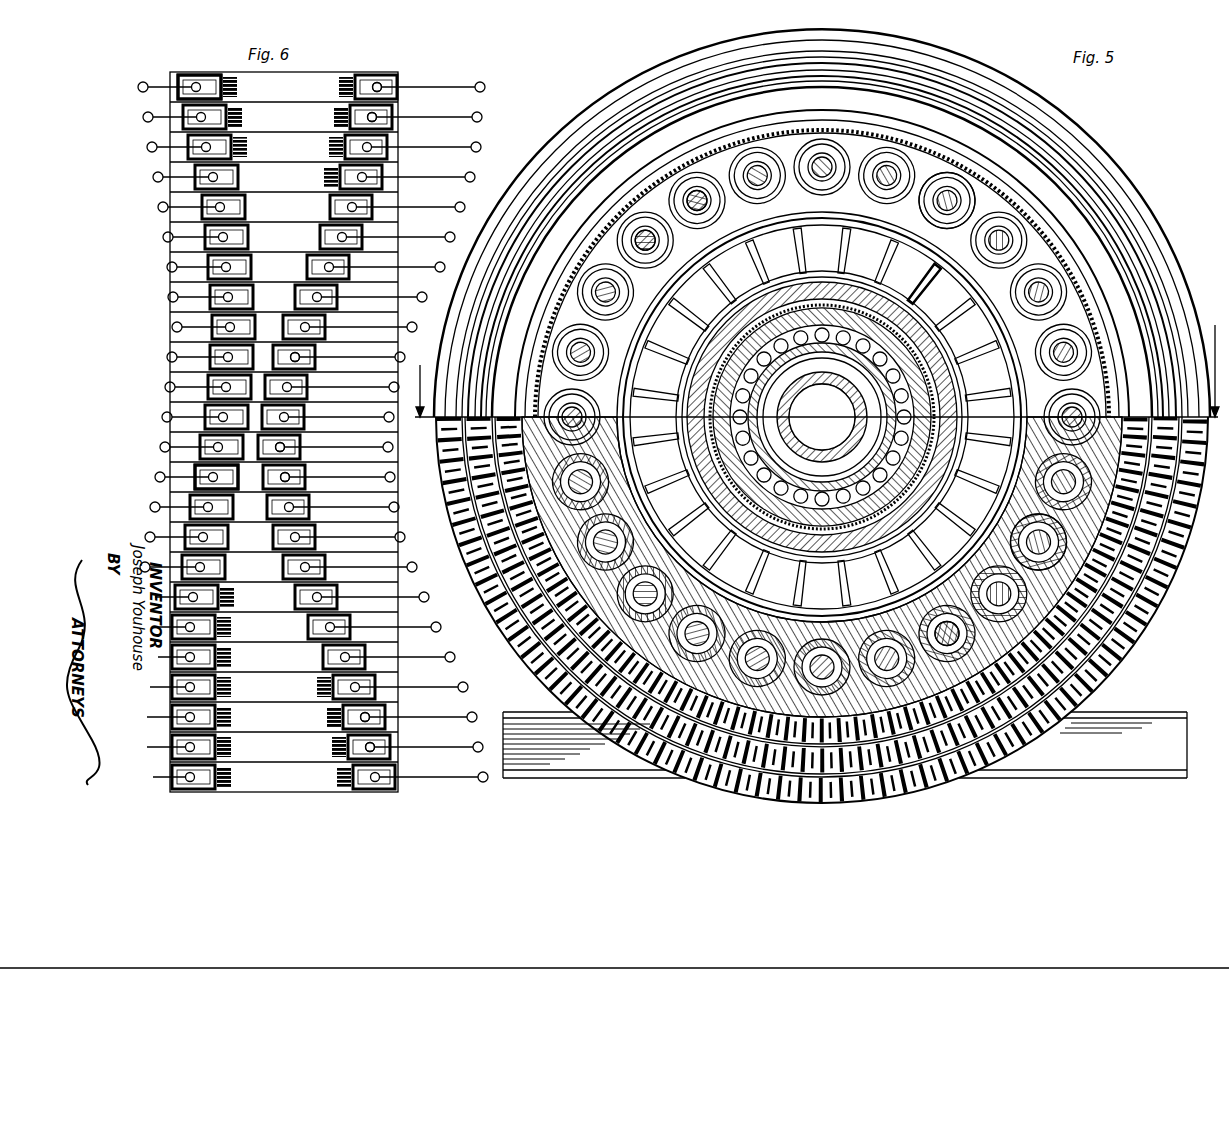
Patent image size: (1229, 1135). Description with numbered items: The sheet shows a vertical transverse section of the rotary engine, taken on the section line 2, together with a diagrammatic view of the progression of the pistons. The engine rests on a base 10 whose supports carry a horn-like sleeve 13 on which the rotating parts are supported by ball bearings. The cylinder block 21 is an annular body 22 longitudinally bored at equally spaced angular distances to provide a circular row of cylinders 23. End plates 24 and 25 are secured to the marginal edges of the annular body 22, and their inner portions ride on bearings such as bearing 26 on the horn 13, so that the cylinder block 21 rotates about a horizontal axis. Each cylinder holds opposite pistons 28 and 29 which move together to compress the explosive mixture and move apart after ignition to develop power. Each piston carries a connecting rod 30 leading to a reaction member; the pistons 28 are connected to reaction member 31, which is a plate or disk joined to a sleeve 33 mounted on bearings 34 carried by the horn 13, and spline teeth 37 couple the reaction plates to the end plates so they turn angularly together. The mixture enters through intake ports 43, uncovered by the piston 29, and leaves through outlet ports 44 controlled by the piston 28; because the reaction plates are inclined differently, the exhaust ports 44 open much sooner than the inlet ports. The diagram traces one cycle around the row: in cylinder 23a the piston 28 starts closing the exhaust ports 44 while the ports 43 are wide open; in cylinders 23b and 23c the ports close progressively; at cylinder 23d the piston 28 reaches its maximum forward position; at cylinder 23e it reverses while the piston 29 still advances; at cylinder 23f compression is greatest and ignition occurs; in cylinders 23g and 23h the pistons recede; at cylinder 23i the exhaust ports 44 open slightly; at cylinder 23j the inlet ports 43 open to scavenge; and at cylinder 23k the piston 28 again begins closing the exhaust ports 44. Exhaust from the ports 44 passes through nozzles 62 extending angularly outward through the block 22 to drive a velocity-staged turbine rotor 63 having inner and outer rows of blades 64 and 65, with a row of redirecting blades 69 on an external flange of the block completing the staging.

In FIG. 5, the section line 2- 2 is at (815, 360).
In FIG. 5, the base 10 is at (845, 758).
In FIG. 5, the horn-like sleeve 13 is at (869, 419).
In FIG. 5, the cylinder block 21 is at (822, 223).
In FIG. 5, the annular body 22 is at (822, 244).
In FIG. 5, the cylinders 23 is at (831, 402).
In FIG. 6, the cylinder 23a is at (170, 78).
In FIG. 6, the cylinder 23b is at (168, 108).
In FIG. 6, the cylinder 23c is at (168, 185).
In FIG. 6, the cylinder 23d is at (170, 319).
In FIG. 6, the cylinder 23e is at (170, 347).
In FIG. 6, the cylinder 23f is at (170, 405).
In FIG. 6, the cylinder 23g is at (170, 435).
In FIG. 6, the cylinder 23h is at (170, 483).
In FIG. 6, the cylinder 23i is at (170, 527).
In FIG. 6, the cylinder 23j is at (312, 718).
In FIG. 6, the cylinder 23k is at (315, 750).
In FIG. 5, the end plate 24 is at (822, 417).
In FIG. 5, the end plate 25 is at (831, 263).
In FIG. 5, the bearing 26 is at (915, 288).
In FIG. 5, the piston 28 is at (1013, 542).
In FIG. 6, the piston 28 is at (213, 75).
In FIG. 5, the piston 29 is at (945, 190).
In FIG. 6, the piston 29 is at (360, 78).
In FIG. 5, the connecting rod 30 is at (797, 418).
In FIG. 5, the reaction member 31 is at (822, 417).
In FIG. 5, the sleeve 33 is at (822, 417).
In FIG. 5, the bearings 34 is at (822, 421).
In FIG. 5, the spline teeth 37 is at (822, 404).
In FIG. 6, the intake ports 43 is at (337, 82).
In FIG. 6, the outlet ports 44 is at (237, 85).
In FIG. 5, the nozzles 62 is at (822, 613).
In FIG. 5, the velocity-staged turbine rotor 63 is at (830, 580).
In FIG. 5, the inner row of blades 64 is at (829, 603).
In FIG. 5, the outer row of blades 65 is at (825, 610).
In FIG. 5, the redirecting blades 69 is at (826, 595).